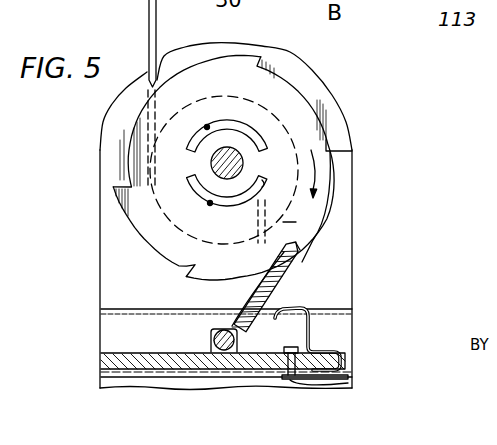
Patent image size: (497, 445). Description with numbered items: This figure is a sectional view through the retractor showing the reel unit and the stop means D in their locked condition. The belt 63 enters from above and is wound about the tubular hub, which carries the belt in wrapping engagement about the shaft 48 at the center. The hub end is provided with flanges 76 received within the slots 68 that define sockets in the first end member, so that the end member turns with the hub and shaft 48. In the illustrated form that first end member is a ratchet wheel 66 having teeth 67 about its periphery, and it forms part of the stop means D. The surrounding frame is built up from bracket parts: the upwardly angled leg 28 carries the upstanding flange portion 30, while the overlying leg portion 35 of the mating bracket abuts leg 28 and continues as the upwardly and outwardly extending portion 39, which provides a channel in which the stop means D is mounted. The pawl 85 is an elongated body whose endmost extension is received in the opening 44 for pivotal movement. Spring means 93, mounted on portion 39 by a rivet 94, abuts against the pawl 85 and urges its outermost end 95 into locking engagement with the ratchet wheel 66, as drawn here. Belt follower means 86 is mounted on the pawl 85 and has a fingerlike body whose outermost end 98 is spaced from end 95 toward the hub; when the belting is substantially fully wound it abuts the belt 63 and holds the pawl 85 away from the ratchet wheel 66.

The upstanding flange portion 30 is at (307, 62).
The belt 63 is at (148, 20).
The ratchet wheel 66 is at (330, 106).
The teeth 67 is at (352, 156).
The shaft 48 is at (211, 163).
The flanges 76 is at (255, 133).
The slots 68 is at (207, 127).
The outermost end 98 is at (260, 234).
The belt follower means 86 is at (296, 222).
The pawl 85 is at (298, 275).
The outermost end 95 is at (293, 250).
The stop means D is at (340, 269).
The opening 44 is at (212, 331).
The upwardly angled leg 28 is at (116, 323).
The spring means 93 is at (322, 326).
The outwardly extending portion 39 is at (101, 360).
The leg portion 35 is at (108, 378).
The rivet 94 is at (343, 377).